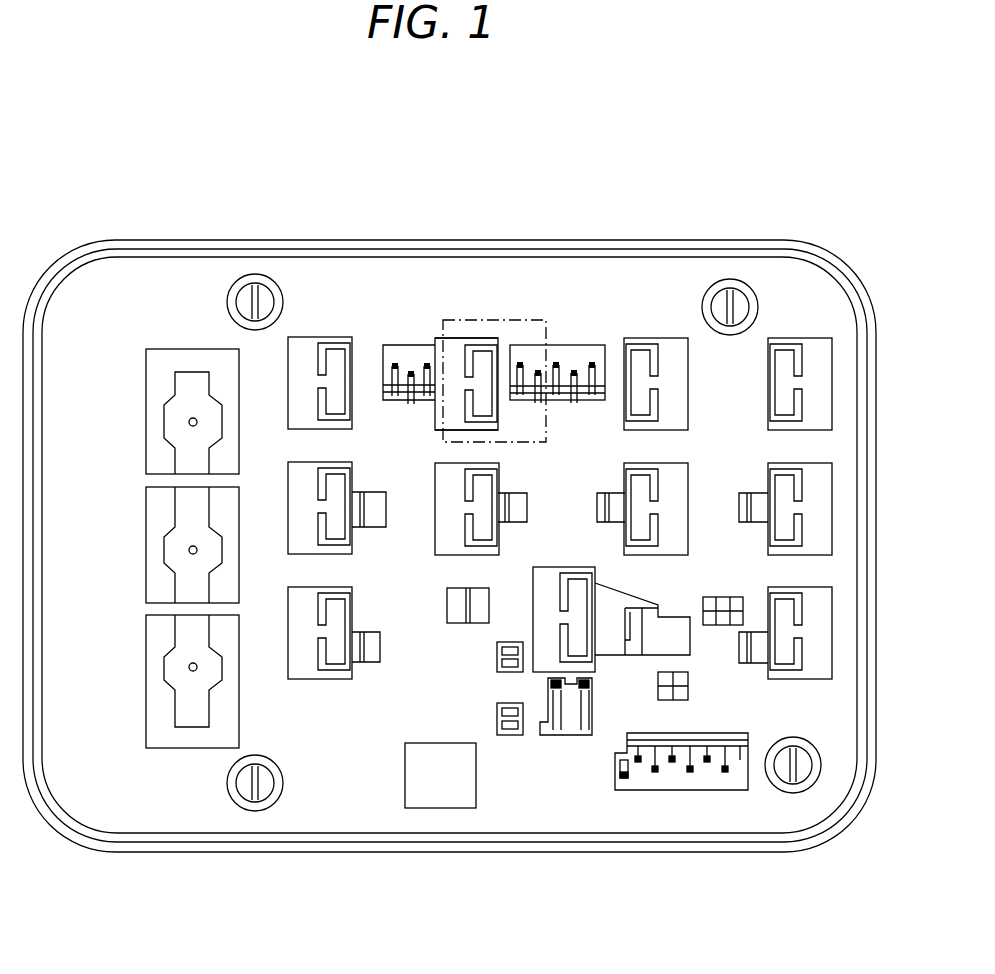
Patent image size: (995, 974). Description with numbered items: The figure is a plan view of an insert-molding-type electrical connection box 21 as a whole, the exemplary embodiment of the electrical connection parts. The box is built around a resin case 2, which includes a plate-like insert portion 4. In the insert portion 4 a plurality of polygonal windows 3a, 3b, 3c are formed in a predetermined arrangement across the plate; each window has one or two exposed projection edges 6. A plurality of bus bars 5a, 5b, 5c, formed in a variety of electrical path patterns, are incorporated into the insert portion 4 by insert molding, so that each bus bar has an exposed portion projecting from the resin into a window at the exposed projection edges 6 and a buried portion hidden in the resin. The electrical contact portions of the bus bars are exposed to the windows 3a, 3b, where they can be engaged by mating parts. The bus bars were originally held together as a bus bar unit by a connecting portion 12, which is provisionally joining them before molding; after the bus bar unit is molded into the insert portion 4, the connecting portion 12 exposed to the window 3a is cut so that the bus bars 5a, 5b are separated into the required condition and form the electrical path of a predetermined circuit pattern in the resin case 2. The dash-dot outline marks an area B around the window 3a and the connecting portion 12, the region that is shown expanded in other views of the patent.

The electrical connection box 21 is at (693, 203).
The resin case 2 is at (403, 851).
The insert portion 4 is at (535, 808).
The polygonal window 3a is at (452, 339).
The polygonal window 3b is at (580, 345).
The polygonal window 3c is at (193, 349).
The bus bar 5a is at (495, 338).
The bus bar 5b is at (497, 430).
The bus bar 5c is at (164, 416).
The exposed projection edge 6 is at (498, 407).
The connecting portion 12 is at (477, 393).
The area B is at (490, 320).